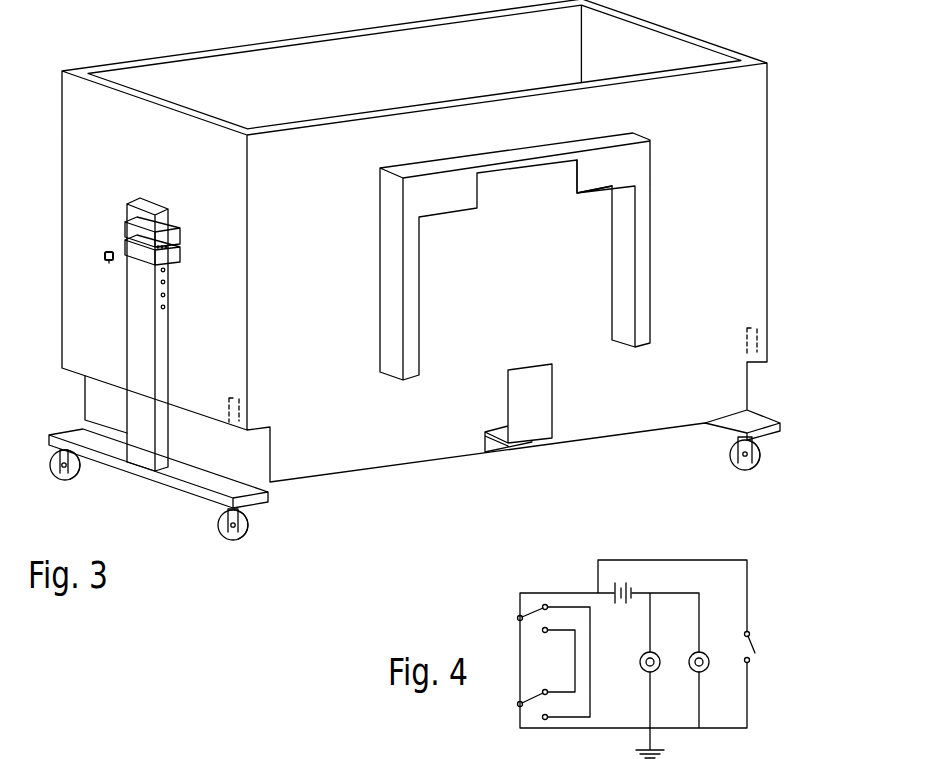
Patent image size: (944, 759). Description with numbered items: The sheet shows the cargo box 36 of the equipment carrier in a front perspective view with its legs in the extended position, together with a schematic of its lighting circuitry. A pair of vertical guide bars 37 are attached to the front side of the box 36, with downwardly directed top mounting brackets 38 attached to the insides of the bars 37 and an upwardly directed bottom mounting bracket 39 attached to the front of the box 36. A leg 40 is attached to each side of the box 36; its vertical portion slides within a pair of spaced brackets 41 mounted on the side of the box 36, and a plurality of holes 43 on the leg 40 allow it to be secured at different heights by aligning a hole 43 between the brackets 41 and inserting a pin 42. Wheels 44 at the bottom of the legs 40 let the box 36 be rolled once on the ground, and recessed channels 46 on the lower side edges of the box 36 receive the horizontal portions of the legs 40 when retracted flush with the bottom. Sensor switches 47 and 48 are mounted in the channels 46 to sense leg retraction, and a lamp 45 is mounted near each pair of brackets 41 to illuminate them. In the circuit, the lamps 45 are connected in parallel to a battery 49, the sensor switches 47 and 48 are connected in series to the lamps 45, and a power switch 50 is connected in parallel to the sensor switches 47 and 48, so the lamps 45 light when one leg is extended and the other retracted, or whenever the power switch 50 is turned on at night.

In FIG. 3, the cargo box 36 is at (768, 182).
In FIG. 3, the vertical guide bars 37 is at (620, 276).
In FIG. 3, the top mounting brackets 38 is at (589, 188).
In FIG. 3, the bottom mounting bracket 39 is at (517, 410).
In FIG. 3, the legs 40 is at (166, 344).
In FIG. 3, the brackets 41 is at (181, 237).
In FIG. 3, the pin 42 is at (181, 262).
In FIG. 3, the holes 43 is at (167, 307).
In FIG. 3, the wheels 44 is at (63, 483).
In FIG. 3, the lamps 45 is at (107, 263).
In FIG. 4, the lamps 45 is at (642, 670).
In FIG. 3, the recessed channels 46 is at (90, 398).
In FIG. 3, the sensor switch 47 is at (241, 407).
In FIG. 4, the sensor switch 47 is at (518, 619).
In FIG. 3, the sensor switch 48 is at (758, 336).
In FIG. 4, the sensor switch 48 is at (518, 705).
In FIG. 4, the battery 49 is at (622, 603).
In FIG. 4, the power switch 50 is at (751, 641).